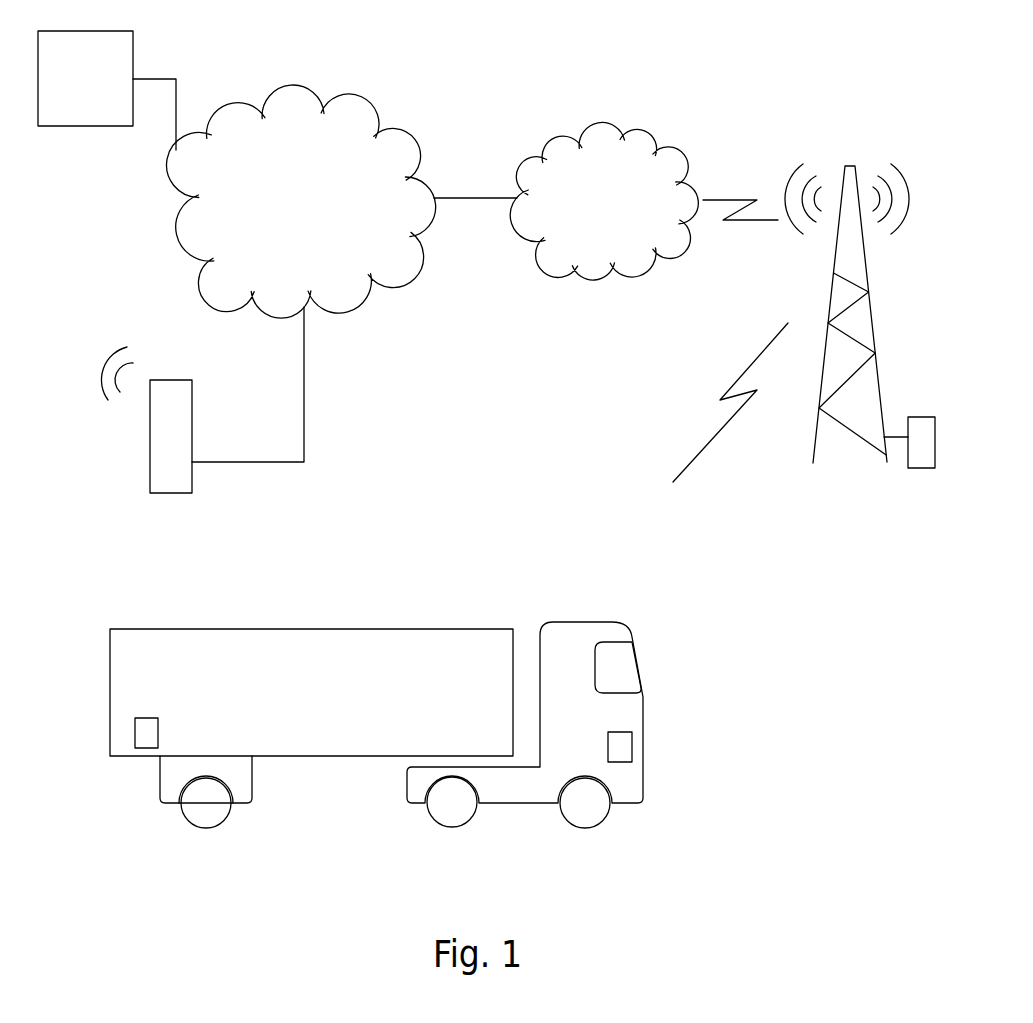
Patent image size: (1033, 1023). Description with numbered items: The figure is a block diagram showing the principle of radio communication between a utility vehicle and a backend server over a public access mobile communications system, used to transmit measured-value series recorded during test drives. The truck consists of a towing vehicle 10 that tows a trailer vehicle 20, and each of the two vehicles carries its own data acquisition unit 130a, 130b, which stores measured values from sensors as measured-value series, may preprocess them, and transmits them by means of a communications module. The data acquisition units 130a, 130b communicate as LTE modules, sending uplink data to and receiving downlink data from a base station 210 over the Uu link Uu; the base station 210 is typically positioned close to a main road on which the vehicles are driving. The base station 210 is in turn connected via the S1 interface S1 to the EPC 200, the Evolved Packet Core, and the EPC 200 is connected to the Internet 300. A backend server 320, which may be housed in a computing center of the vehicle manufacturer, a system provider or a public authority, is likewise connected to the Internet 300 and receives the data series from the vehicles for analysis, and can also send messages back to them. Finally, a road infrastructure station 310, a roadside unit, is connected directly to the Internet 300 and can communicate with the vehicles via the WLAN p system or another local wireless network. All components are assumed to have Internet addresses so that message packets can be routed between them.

The towing vehicle 10 is at (575, 637).
The trailer vehicle 20 is at (323, 638).
The data acquisition unit 130a is at (145, 740).
The data acquisition unit 130b is at (620, 749).
The EPC (Evolved Packet Core) 200 is at (635, 145).
The base station 210 is at (879, 387).
The Internet 300 is at (397, 147).
The road infrastructure station 310 is at (160, 443).
The backend server 320 is at (82, 126).
The S1 interface S1 is at (740, 187).
The Uu link Uu is at (730, 402).